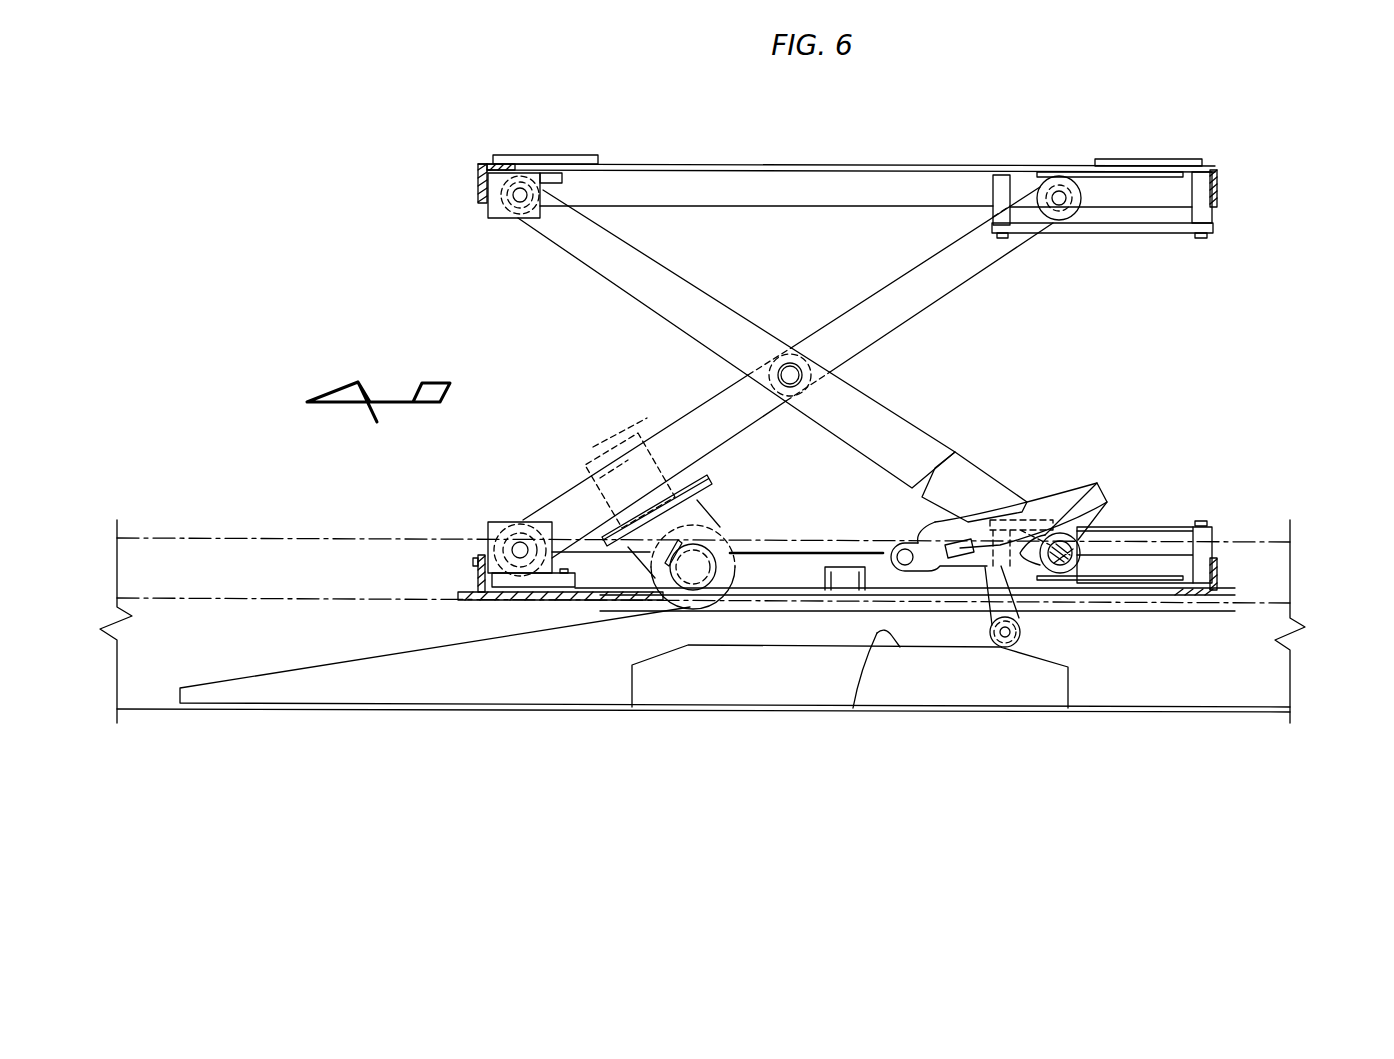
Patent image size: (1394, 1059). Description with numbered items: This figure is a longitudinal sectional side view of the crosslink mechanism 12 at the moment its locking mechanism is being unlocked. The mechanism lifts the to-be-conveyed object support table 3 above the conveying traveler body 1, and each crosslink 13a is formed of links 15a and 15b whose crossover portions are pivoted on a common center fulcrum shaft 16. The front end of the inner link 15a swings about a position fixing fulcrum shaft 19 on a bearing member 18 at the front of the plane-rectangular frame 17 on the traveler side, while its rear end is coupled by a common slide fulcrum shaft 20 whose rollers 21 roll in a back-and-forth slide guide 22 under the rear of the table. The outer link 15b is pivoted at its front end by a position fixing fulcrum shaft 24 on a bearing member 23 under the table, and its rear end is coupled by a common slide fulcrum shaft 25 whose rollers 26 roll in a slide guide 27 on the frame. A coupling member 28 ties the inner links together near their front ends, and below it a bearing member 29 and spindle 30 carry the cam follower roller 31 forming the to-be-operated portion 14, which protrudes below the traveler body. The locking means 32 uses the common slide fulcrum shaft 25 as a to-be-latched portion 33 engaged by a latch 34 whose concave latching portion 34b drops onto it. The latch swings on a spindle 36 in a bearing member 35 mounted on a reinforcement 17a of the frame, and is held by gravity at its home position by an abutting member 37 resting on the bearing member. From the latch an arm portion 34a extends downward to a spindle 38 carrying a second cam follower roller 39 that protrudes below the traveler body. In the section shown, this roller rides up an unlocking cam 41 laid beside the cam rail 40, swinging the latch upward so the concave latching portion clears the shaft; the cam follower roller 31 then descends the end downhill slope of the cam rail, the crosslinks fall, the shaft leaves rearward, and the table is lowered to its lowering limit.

The conveying traveler body 1 is at (222, 538).
The to-be-conveyed object support table 3 is at (685, 166).
The crosslink mechanism 12 is at (614, 296).
The crosslink 13a is at (913, 260).
The to-be-operated portion 14 is at (690, 613).
The link 15a is at (921, 303).
The link 15b is at (698, 292).
The center fulcrum shaft 16 is at (790, 372).
The plane-rectangular frame 17 is at (477, 580).
The reinforcement 17a is at (840, 565).
The bearing member 18 is at (493, 527).
The position fixing fulcrum shaft 19 is at (520, 545).
The common slide fulcrum shaft 20 is at (1059, 194).
The roller 21 is at (1071, 207).
The back-and-forth slide guide 22 is at (1148, 236).
The bearing member 23 is at (497, 212).
The position fixing fulcrum shaft 24 is at (521, 192).
The common slide fulcrum shaft 25 is at (1074, 572).
The roller 26 is at (1100, 565).
The back-and-forth slide guide 27 is at (1174, 525).
The coupling member 28 is at (627, 455).
The bearing member 29 is at (705, 518).
The spindle 30 is at (677, 600).
The cam follower roller 31 is at (747, 582).
The locking means 32 is at (1097, 470).
The to-be-latched portion 33 is at (1115, 497).
The latch 34 is at (1043, 495).
The arm portion 34a is at (988, 614).
The concave latching portion 34b is at (1020, 518).
The bearing member 35 is at (936, 543).
The spindle 36 is at (895, 538).
The abutting member 37 is at (956, 543).
The spindle 38 is at (1012, 648).
The cam follower roller 39 is at (996, 642).
The cam rail 40 is at (345, 692).
The unlocking cam 41 is at (853, 708).